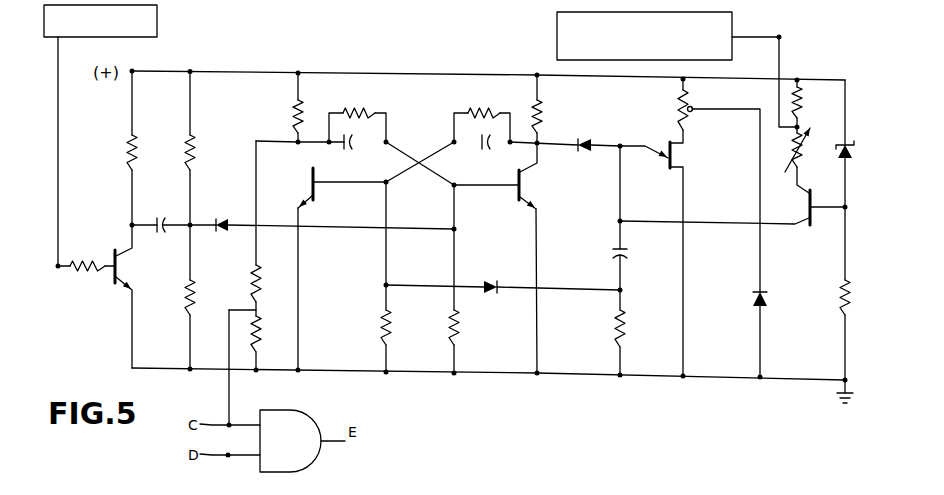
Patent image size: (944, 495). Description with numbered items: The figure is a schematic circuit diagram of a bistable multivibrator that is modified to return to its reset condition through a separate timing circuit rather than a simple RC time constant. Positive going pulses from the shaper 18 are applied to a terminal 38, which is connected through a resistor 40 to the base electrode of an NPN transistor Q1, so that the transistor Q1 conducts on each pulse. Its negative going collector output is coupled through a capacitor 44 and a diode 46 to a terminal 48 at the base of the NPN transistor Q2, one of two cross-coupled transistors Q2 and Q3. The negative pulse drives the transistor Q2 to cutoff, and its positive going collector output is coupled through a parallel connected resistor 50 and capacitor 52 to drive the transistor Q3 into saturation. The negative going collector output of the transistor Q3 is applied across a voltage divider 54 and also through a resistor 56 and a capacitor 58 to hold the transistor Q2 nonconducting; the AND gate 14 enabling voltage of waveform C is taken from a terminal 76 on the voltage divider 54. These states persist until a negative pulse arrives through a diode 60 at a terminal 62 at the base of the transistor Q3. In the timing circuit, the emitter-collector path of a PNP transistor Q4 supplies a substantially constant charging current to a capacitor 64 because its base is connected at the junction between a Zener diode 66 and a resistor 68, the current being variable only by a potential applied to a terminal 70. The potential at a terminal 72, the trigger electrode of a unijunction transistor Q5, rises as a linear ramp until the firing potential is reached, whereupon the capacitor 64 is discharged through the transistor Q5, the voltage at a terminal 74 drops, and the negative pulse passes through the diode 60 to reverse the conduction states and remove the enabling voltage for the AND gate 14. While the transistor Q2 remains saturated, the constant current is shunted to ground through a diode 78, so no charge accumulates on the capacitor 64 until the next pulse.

The shaper 18 is at (157, 30).
The terminal 38 is at (557, 30).
The resistor 40 is at (80, 272).
The NPN transistor Q1 is at (121, 268).
The capacitor 44 is at (161, 221).
The diode 46 is at (221, 219).
The voltage divider 54 is at (258, 267).
The terminal 76 is at (248, 307).
The AND gate 14 is at (304, 420).
The NPN transistor Q3 is at (310, 182).
The resistor 56 is at (367, 112).
The capacitor 58 is at (350, 150).
The resistor 50 is at (485, 112).
The capacitor 52 is at (487, 150).
The terminal 62 is at (384, 186).
The terminal 48 is at (455, 188).
The NPN transistor Q2 is at (524, 188).
The diode 60 is at (489, 294).
The diode 78 is at (586, 153).
The terminal 72 is at (620, 144).
The unijunction transistor Q5 is at (674, 157).
The capacitor 64 is at (630, 253).
The terminal 74 is at (626, 292).
The terminal 70 is at (781, 39).
The PNP transistor Q4 is at (806, 215).
The Zener diode 66 is at (856, 149).
The resistor 68 is at (851, 290).